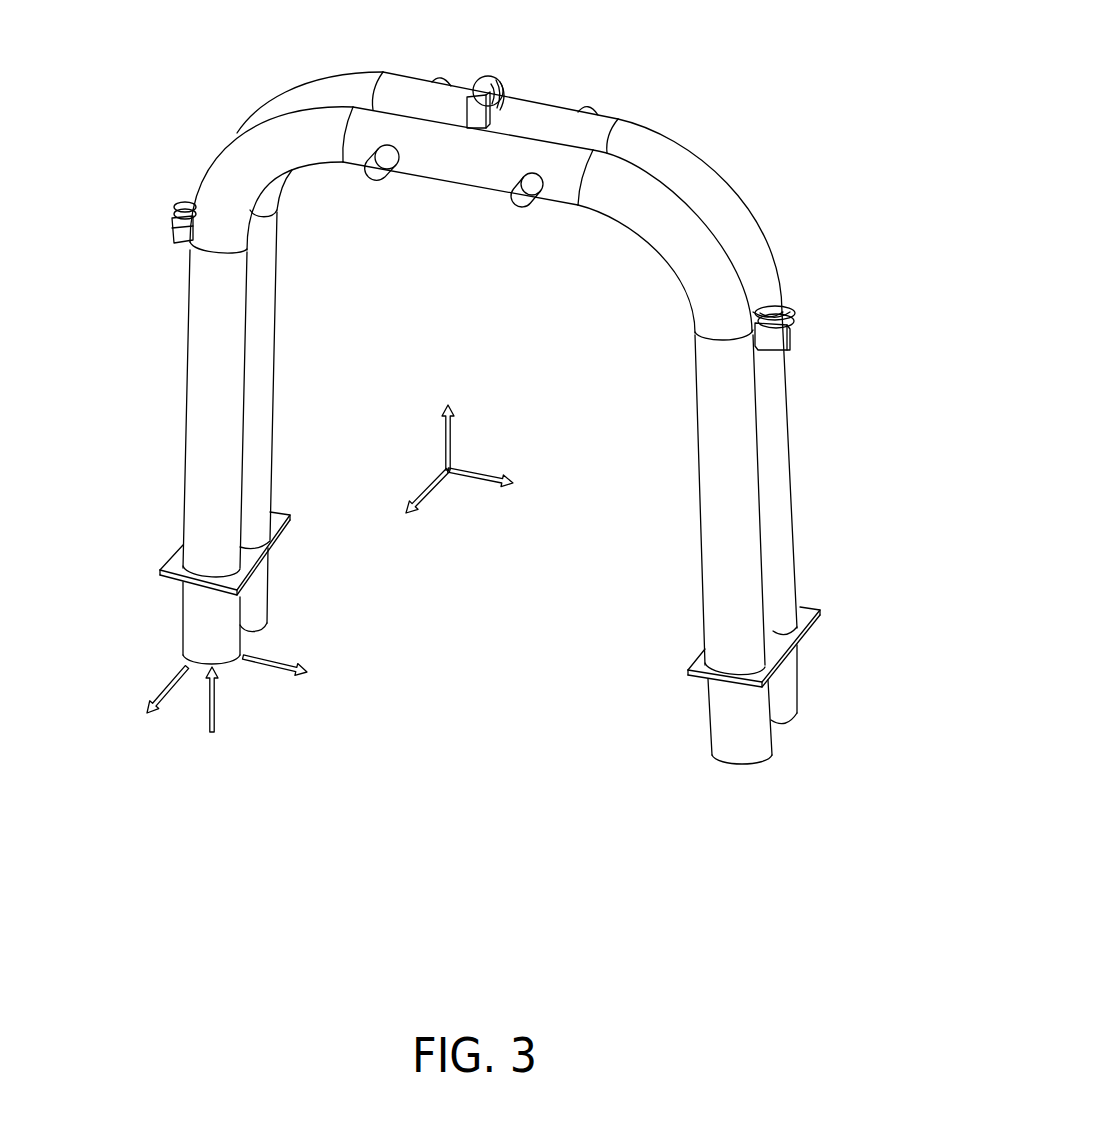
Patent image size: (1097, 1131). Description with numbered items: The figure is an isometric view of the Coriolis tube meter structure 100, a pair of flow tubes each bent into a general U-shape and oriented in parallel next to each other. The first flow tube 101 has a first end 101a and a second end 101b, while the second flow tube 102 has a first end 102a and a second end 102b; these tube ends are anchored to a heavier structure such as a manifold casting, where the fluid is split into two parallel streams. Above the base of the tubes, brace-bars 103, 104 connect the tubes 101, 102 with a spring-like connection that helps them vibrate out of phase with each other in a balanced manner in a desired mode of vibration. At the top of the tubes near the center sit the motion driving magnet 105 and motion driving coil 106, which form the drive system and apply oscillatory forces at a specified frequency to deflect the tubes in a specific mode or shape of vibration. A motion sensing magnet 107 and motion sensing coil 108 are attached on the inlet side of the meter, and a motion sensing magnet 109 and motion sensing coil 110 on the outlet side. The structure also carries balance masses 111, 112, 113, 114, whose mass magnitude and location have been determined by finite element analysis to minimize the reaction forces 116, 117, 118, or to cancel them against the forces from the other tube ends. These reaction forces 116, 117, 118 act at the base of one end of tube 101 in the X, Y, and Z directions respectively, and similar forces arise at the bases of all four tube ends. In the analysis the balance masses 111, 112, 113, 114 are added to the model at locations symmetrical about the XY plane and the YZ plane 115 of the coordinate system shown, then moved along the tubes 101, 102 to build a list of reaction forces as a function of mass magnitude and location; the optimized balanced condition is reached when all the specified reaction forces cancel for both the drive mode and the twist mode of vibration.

The tube structure 100 is at (706, 69).
The first flow tube 101 is at (735, 597).
The first end of the first flow tube 101a is at (195, 632).
The second end of the first flow tube 101b is at (728, 742).
The second flow tube 102 is at (780, 545).
The first end of the second flow tube 102a is at (263, 595).
The second end of the second flow tube 102b is at (793, 698).
The brace-bar 103 is at (705, 664).
The brace-bar 104 is at (178, 568).
The motion driving magnet 105 is at (477, 112).
The motion driving coil 106 is at (491, 82).
The motion sensing magnet 107 is at (775, 336).
The motion sensing coil 108 is at (790, 318).
The motion sensing magnet 109 is at (182, 230).
The motion sensing coil 110 is at (186, 207).
The balance mass 111 is at (383, 163).
The balance mass 112 is at (523, 197).
The balance mass 113 is at (443, 81).
The balance mass 114 is at (590, 110).
The YZ plane 115 is at (486, 440).
The reaction force 116 is at (274, 652).
The reaction force 117 is at (223, 704).
The reaction force 118 is at (166, 682).